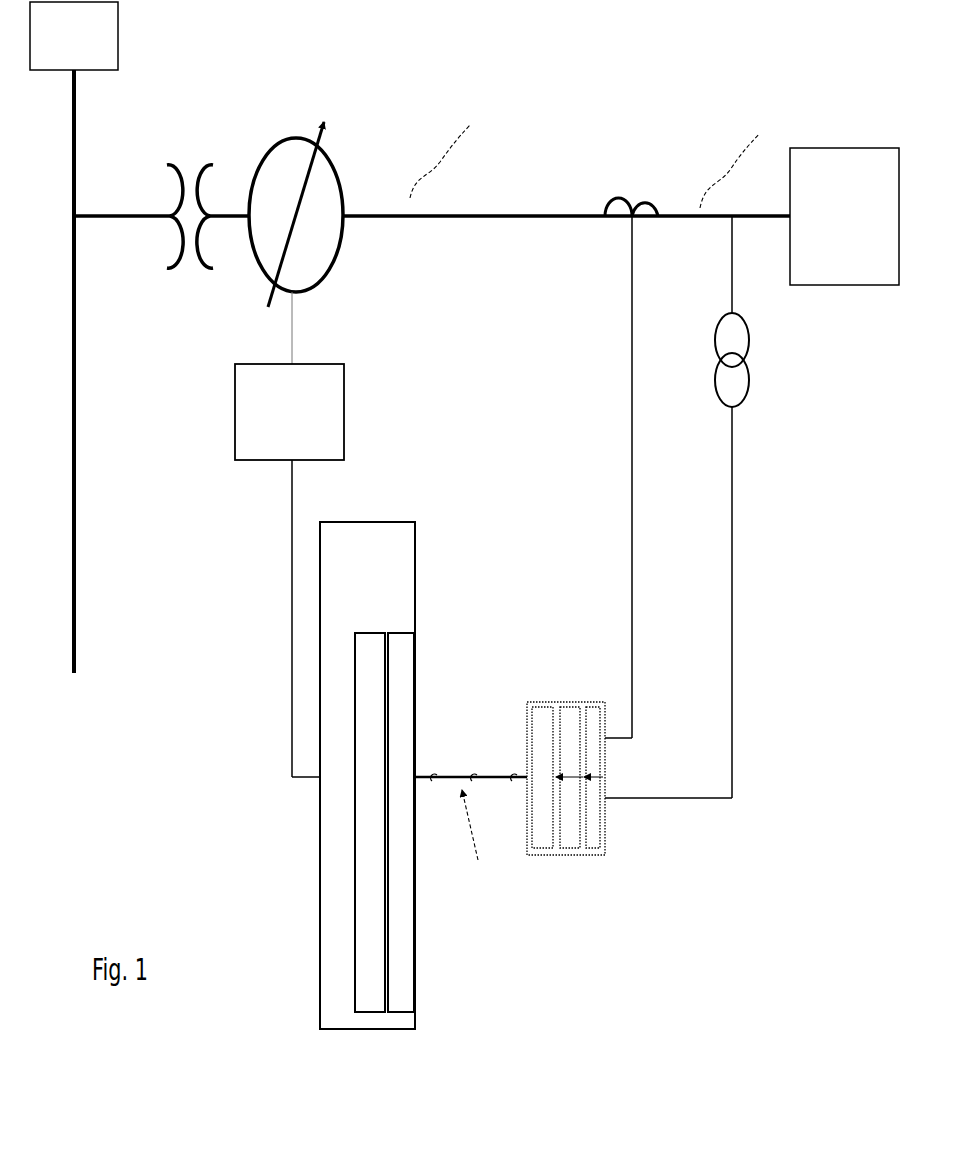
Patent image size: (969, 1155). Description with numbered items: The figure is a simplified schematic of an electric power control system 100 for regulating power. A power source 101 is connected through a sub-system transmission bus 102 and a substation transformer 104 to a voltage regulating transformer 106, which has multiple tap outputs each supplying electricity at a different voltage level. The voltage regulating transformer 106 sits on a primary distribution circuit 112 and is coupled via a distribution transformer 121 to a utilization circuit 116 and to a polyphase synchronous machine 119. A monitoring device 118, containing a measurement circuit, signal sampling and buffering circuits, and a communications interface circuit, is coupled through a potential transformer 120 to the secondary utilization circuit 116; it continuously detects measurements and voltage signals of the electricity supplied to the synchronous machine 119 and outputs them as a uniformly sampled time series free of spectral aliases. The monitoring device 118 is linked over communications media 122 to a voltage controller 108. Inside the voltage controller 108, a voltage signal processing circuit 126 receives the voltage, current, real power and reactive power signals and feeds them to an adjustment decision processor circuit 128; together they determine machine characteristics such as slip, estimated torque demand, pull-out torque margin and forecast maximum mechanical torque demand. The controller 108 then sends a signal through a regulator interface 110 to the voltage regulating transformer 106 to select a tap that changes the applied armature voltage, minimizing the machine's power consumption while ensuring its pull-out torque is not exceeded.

The electric power control system 100 is at (481, 452).
The power source 101 is at (50, 51).
The sub-system transmission bus 102 is at (76, 292).
The substation transformer 104 is at (180, 262).
The voltage regulating transformer 106 is at (335, 262).
The voltage controller 108 is at (400, 522).
The regulator interface 110 is at (344, 416).
The primary distribution circuit 112 is at (450, 218).
The utilization circuit 116 is at (752, 218).
The monitoring device 118 is at (608, 828).
The polyphase synchronous machine 119 is at (844, 216).
The potential transformer 120 is at (748, 407).
The distribution transformer 121 is at (648, 224).
The communications media 122 is at (430, 768).
The voltage signal processing circuit 126 is at (415, 1005).
The adjustment decision processor circuit 128 is at (352, 1005).